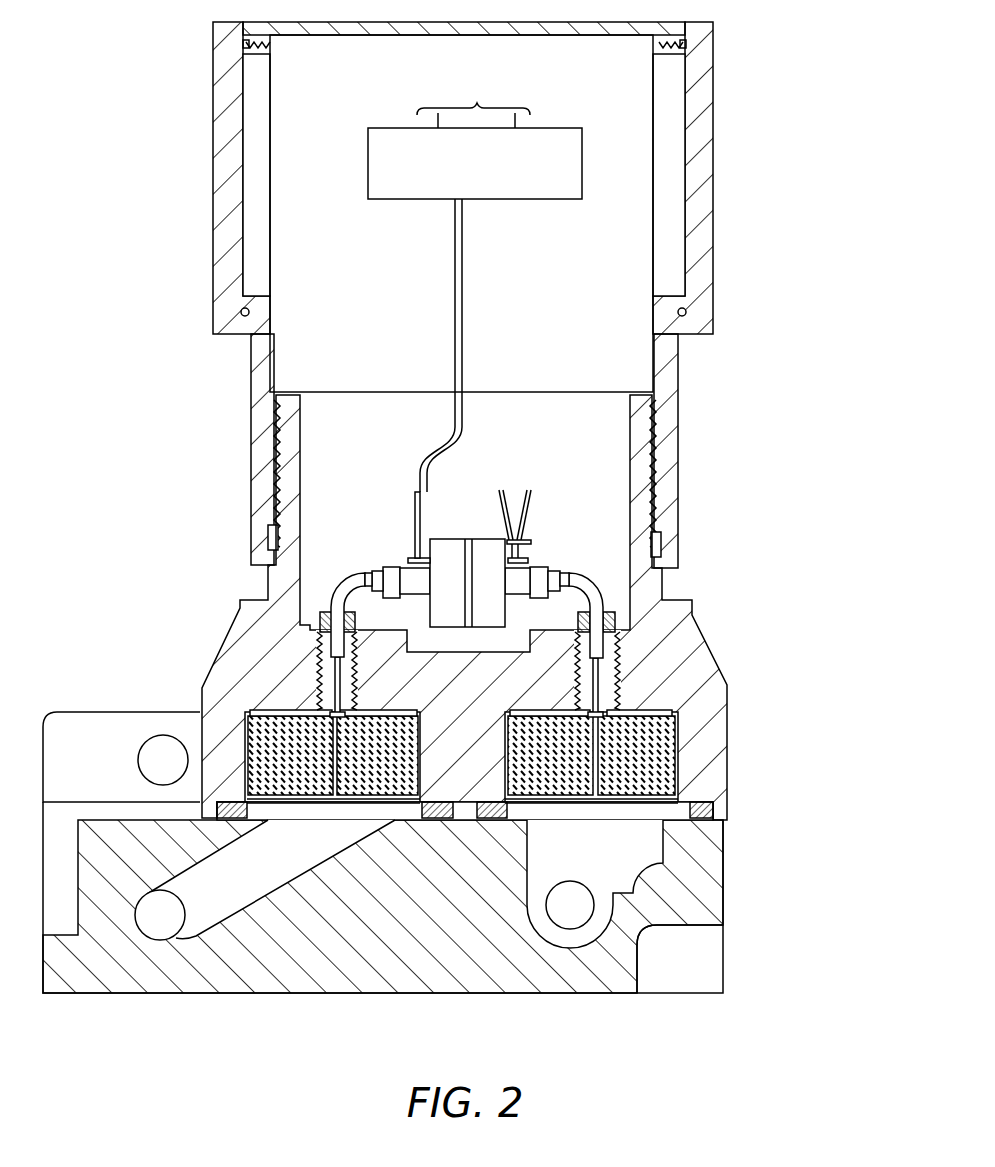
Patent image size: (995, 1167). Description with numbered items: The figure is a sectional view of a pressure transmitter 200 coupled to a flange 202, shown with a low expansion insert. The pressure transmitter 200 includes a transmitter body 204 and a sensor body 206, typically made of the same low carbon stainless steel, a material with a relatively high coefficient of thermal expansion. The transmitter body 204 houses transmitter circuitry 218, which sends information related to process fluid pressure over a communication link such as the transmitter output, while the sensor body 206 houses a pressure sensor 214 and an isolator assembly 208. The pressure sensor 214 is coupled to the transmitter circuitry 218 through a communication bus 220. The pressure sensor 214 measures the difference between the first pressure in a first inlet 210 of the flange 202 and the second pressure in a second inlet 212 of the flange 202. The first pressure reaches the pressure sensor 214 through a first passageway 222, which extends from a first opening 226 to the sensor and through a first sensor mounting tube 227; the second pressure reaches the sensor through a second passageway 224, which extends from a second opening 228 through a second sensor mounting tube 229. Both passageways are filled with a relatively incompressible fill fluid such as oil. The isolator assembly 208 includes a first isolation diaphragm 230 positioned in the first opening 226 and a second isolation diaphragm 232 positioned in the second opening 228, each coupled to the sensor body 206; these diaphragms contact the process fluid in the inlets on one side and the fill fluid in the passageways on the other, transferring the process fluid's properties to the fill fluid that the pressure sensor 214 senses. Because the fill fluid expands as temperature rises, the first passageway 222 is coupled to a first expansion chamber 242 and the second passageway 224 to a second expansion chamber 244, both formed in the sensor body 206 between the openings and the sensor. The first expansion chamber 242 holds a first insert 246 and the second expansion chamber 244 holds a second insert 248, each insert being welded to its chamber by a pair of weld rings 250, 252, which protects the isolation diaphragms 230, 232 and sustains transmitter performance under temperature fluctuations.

The pressure transmitter 200 is at (742, 194).
The flange 202 is at (87, 737).
The transmitter body 204 is at (713, 123).
The sensor body 206 is at (692, 625).
The isolator assembly 208 is at (731, 830).
The first inlet 210 is at (263, 886).
The second inlet 212 is at (627, 877).
The pressure sensor 214 is at (443, 547).
The transmitter circuitry 218 is at (583, 146).
The communication bus 220 is at (463, 277).
The first passageway 222 is at (318, 660).
The second passageway 224 is at (605, 665).
The first opening 226 is at (317, 808).
The first sensor mounting tube 227 is at (352, 580).
The second opening 228 is at (588, 808).
The second sensor mounting tube 229 is at (573, 577).
The first isolation diaphragm 230 is at (363, 818).
The second isolation diaphragm 232 is at (657, 827).
The first expansion chamber 242 is at (243, 742).
The second expansion chamber 244 is at (679, 783).
The first insert 246 is at (407, 718).
The second insert 248 is at (660, 752).
The weld ring 250 is at (300, 708).
The weld ring 252 is at (551, 710).